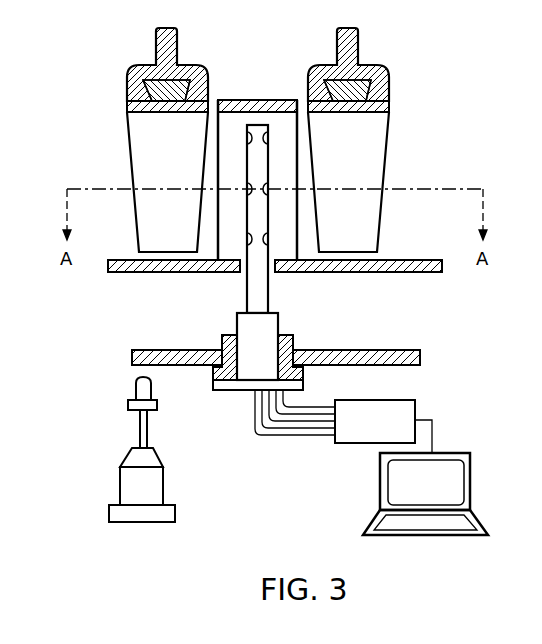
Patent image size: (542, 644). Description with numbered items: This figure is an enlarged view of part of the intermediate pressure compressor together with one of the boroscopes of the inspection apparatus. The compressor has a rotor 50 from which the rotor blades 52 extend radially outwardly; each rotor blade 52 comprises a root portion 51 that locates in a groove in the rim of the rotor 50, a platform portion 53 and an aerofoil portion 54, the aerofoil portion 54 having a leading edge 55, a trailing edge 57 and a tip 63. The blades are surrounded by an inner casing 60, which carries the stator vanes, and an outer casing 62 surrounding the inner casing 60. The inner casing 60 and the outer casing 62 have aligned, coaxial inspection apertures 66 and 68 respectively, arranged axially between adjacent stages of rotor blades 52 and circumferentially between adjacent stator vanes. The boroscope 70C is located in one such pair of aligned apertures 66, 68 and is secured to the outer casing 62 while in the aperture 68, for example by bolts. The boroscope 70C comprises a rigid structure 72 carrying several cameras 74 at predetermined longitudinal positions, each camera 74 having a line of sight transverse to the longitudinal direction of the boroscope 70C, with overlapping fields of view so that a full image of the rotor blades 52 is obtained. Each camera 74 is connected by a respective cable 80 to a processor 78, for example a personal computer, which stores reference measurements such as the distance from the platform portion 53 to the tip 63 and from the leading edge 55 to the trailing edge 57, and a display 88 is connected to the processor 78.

The rotor 50 is at (157, 42).
The root portion 51 is at (380, 86).
The rotor blade 52 is at (134, 193).
The platform portion 53 is at (389, 107).
The aerofoil portion 54 is at (386, 153).
The leading edge 55 is at (318, 187).
The trailing edge 57 is at (380, 228).
The inner casing 60 is at (428, 273).
The outer casing 62 is at (420, 356).
The tip 63 is at (171, 245).
The inspection aperture 66 is at (250, 273).
The inspection aperture 68 is at (213, 372).
The boroscope 70C is at (250, 372).
The rigid structure 72 is at (279, 322).
The camera 74 is at (245, 239).
The processor 78 is at (382, 518).
The cable 80 is at (291, 420).
The display 88 is at (397, 472).